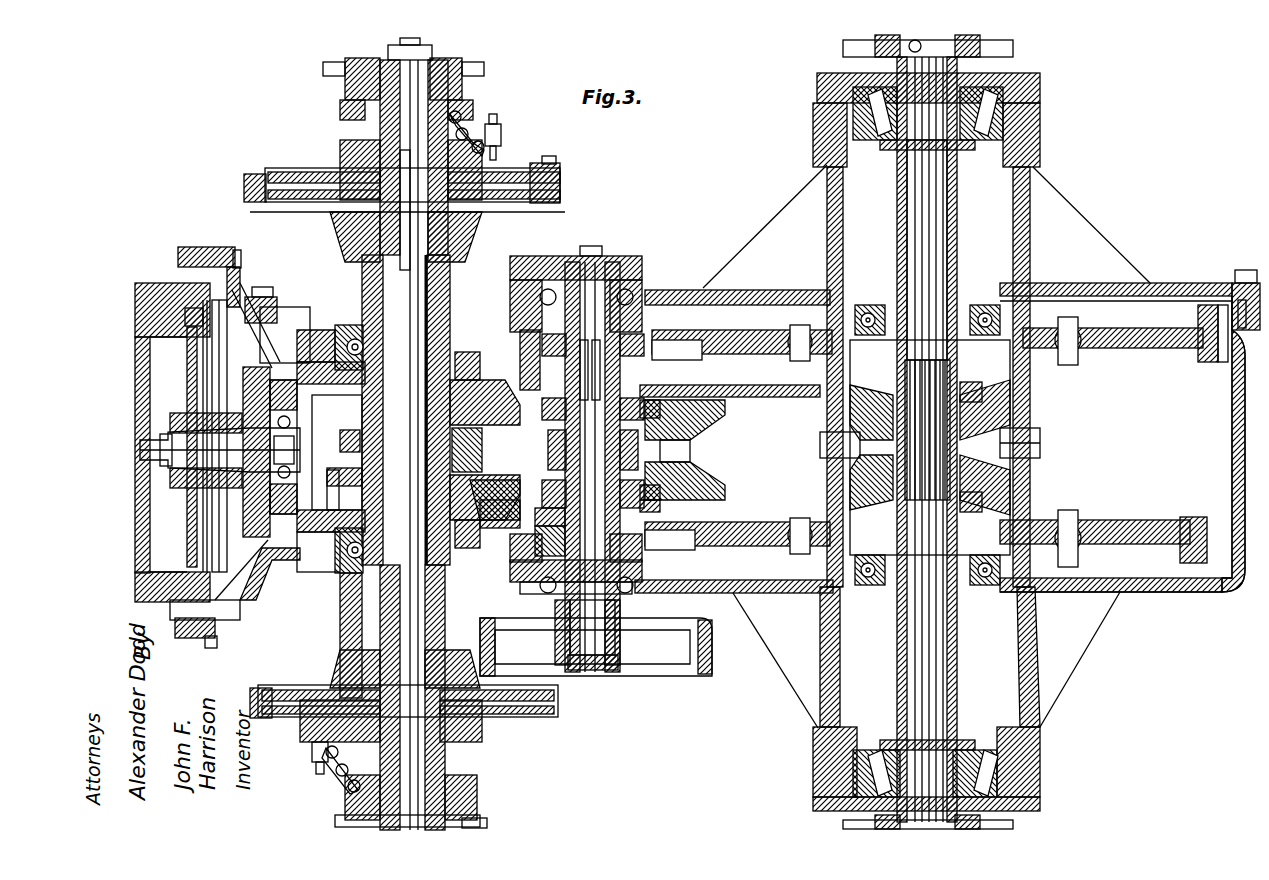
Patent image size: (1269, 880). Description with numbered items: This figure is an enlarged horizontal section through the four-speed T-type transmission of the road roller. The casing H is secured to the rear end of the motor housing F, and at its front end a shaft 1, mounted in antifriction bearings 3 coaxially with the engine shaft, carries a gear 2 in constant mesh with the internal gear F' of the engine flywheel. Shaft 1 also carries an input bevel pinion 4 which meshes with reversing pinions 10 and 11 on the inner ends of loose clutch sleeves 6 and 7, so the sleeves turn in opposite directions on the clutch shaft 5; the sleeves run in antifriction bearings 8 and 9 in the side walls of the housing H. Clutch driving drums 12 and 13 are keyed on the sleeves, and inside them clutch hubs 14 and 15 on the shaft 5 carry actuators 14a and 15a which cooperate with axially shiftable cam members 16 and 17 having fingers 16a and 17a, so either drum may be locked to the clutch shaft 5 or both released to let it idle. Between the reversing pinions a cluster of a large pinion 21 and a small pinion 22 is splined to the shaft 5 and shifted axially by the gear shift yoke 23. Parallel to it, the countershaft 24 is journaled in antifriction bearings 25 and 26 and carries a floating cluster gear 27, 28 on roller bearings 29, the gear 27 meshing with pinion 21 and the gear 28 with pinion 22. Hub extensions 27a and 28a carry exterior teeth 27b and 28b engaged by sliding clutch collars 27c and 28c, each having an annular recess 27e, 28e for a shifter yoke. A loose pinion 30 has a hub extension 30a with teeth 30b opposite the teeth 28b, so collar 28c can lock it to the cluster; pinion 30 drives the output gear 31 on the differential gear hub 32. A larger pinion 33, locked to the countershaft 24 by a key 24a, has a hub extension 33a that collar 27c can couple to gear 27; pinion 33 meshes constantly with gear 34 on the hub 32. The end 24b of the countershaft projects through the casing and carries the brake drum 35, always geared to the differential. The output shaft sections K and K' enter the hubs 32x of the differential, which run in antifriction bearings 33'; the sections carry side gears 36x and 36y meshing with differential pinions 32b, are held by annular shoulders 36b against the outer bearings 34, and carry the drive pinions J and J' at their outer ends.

The shaft 1 is at (150, 447).
The gear 2 is at (185, 360).
The antifriction bearings 3 is at (266, 505).
The input bevel pinion 4 is at (312, 520).
The clutch shaft 5 is at (415, 300).
The clutch sleeve 6 is at (362, 272).
The clutch sleeve 7 is at (372, 622).
The antifriction bearing 8 is at (343, 348).
The antifriction bearing 9 is at (343, 552).
The reversing pinion 10 is at (350, 384).
The reversing pinion 11 is at (488, 512).
The clutch driving drum 12 is at (250, 192).
The clutch driving drum 13 is at (292, 690).
The clutch hub 14 is at (298, 170).
The actuator 14a is at (470, 122).
The clutch hub 15 is at (302, 742).
The actuator 15a is at (348, 780).
The cam member 16 is at (350, 110).
The fingers 16a is at (328, 72).
The cam member 17 is at (448, 800).
The fingers 17a is at (482, 822).
The large pinion 21 is at (342, 489).
The small pinion 22 is at (344, 436).
The gear shift yoke 23 is at (462, 455).
The countershaft 24 is at (600, 278).
The key 24a is at (740, 545).
The end of countershaft 24b is at (592, 652).
The antifriction bearing 25 is at (556, 288).
The antifriction bearing 26 is at (642, 582).
The cluster gear 27 is at (474, 490).
The hub extension 27a is at (566, 494).
The exterior teeth 27b is at (693, 443).
The clutch collar 27c is at (660, 485).
The annular recess 27e is at (660, 502).
The cluster gear 28 is at (445, 394).
The hub extension 28a is at (566, 412).
The exterior teeth 28b is at (730, 387).
The clutch collar 28c is at (660, 420).
The annular recess 28e is at (522, 405).
The antifriction bearings 29 is at (562, 474).
The pinion 30 is at (540, 344).
The hub extension 30a is at (590, 352).
The teeth 30b is at (592, 376).
The output gear 31 is at (736, 346).
The differential gear hub 32 is at (848, 438).
The differential pinion 32b is at (848, 446).
The hubs 32x is at (908, 362).
The pinion 33 is at (767, 410).
The antifriction bearings 33' is at (929, 484).
The hub extension 33a is at (552, 528).
The gear 34 is at (1042, 100).
The brake drum 35 is at (712, 660).
The annular shoulders 36b is at (910, 150).
The side gear 36x is at (1012, 392).
The side gear 36y is at (1012, 494).
The motor housing F is at (217, 434).
The internal gear F' is at (158, 400).
The transmission casing H is at (680, 292).
The drive pinion J is at (957, 808).
The drive pinion J' is at (956, 45).
The output shaft section K is at (943, 439).
The output shaft section K' is at (948, 250).